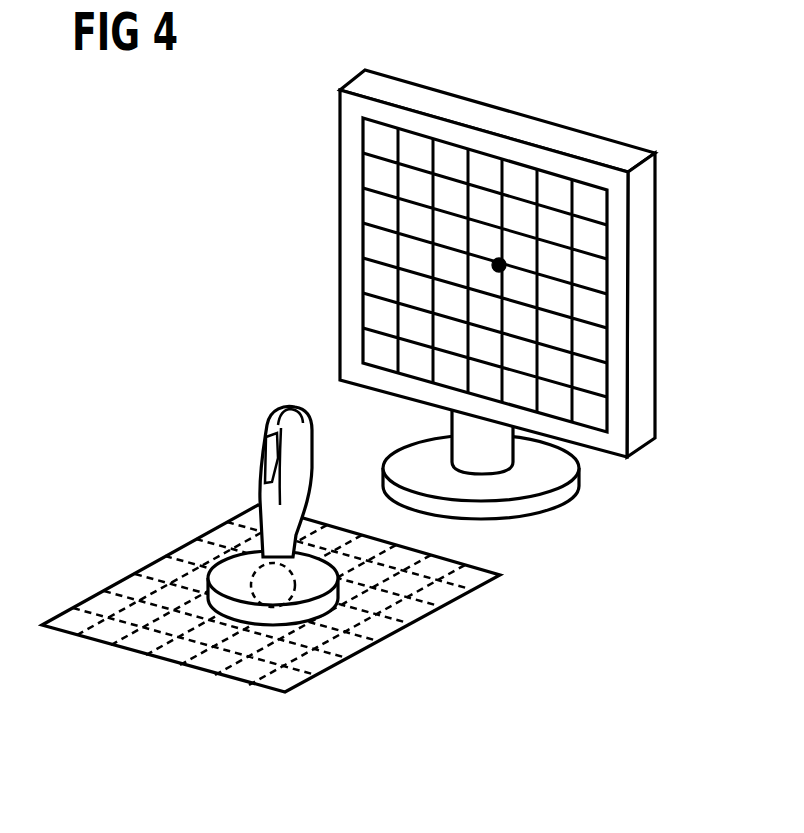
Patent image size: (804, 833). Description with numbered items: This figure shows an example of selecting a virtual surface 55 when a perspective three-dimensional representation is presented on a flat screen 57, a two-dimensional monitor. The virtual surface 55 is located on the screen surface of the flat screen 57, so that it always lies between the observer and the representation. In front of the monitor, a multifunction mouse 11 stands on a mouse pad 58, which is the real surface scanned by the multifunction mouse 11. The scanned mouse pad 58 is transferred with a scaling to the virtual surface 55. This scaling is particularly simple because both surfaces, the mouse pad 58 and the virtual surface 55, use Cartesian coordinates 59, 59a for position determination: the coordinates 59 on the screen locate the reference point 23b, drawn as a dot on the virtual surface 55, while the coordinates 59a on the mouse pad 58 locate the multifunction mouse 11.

The multifunction mouse 11 is at (262, 426).
The reference point 23b is at (499, 262).
The virtual surface 55 is at (610, 318).
The flat screen 57 is at (312, 172).
The mouse pad 58 is at (478, 572).
The Cartesian coordinates 59 is at (384, 297).
The Cartesian coordinates 59a is at (135, 600).